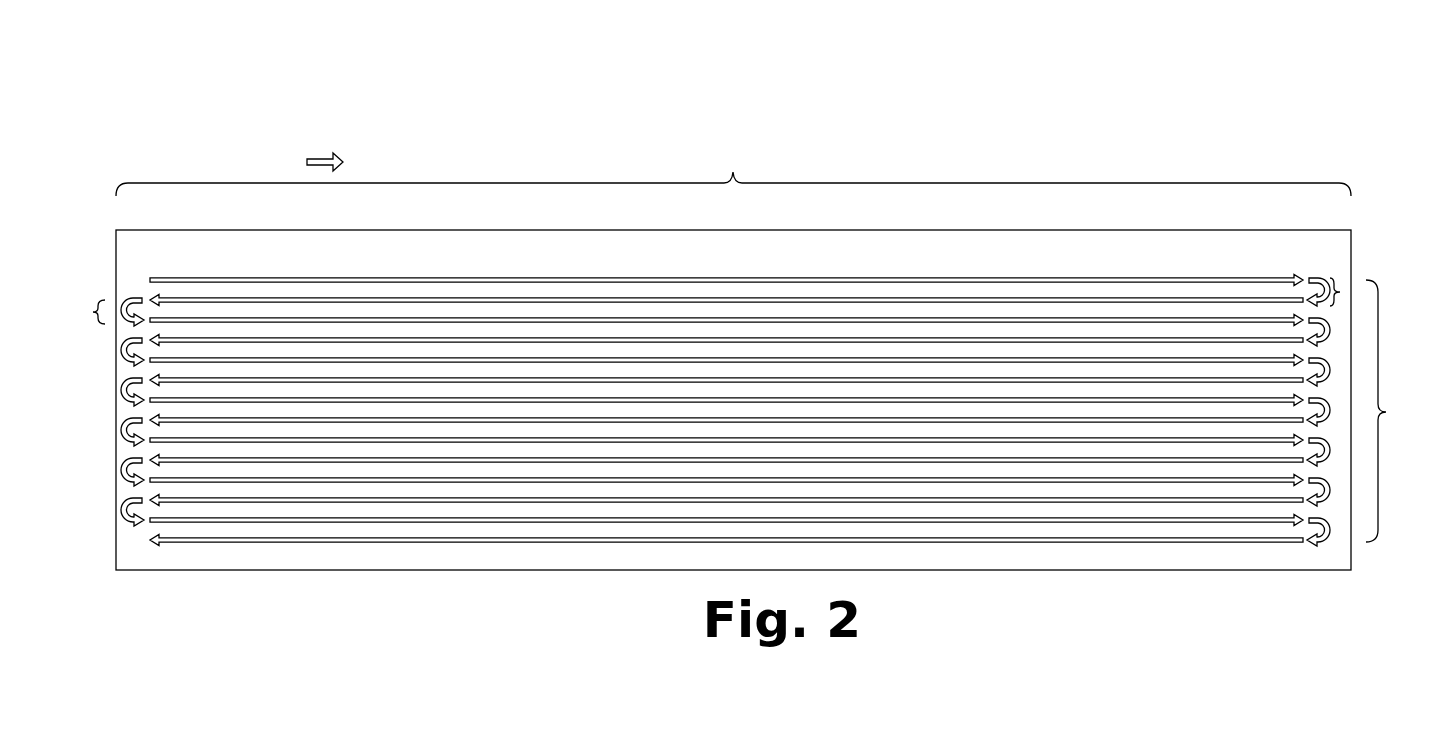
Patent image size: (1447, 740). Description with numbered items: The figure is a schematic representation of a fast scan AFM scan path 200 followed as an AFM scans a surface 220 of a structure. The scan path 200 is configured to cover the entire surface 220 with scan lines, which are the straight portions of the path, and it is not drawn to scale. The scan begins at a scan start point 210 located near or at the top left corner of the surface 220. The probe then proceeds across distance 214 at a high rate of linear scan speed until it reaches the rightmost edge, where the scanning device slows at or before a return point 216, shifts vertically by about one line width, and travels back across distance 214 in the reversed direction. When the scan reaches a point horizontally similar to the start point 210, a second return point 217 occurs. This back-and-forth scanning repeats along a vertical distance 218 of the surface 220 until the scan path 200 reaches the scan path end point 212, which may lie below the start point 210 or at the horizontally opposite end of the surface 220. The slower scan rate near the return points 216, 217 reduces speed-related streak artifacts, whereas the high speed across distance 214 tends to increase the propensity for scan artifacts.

The fast scan AFM scan path 200 is at (430, 99).
The scan start point 210 is at (150, 277).
The scan path end point 212 is at (150, 545).
The distance 214 is at (733, 168).
The return point 216 is at (1341, 292).
The second return point 217 is at (100, 312).
The vertical distance 218 is at (1369, 413).
The surface 220 is at (752, 267).